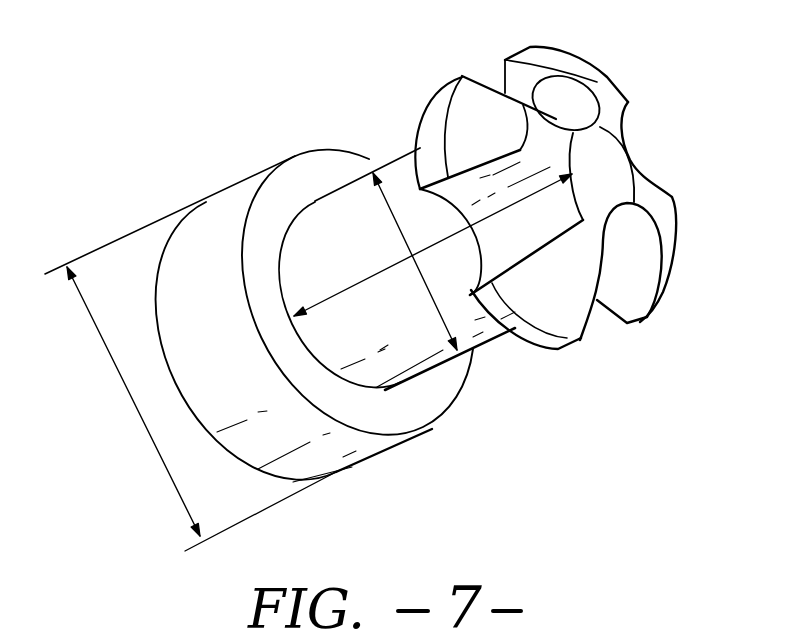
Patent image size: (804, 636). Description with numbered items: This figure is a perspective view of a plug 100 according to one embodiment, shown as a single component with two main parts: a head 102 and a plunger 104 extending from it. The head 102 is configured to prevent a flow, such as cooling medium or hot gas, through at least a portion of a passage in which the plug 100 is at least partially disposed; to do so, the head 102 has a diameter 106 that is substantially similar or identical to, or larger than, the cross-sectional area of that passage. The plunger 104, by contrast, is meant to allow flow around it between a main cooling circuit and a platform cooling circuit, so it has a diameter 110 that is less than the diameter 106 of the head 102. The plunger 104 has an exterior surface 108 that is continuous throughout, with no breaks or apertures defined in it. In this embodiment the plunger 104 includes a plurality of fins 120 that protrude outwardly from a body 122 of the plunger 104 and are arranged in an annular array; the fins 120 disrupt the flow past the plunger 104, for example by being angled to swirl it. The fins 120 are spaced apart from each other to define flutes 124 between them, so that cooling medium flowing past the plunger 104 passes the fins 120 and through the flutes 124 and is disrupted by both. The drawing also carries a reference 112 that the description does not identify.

The plug 100 is at (147, 90).
The head 102 is at (210, 212).
The plunger 104 is at (355, 213).
The diameter 106 is at (127, 385).
The exterior surface 108 is at (395, 160).
The diameter 110 is at (458, 297).
The shoulder 112 is at (352, 288).
The fins 120 is at (662, 252).
The body 122 is at (423, 340).
The flutes 124 is at (633, 262).